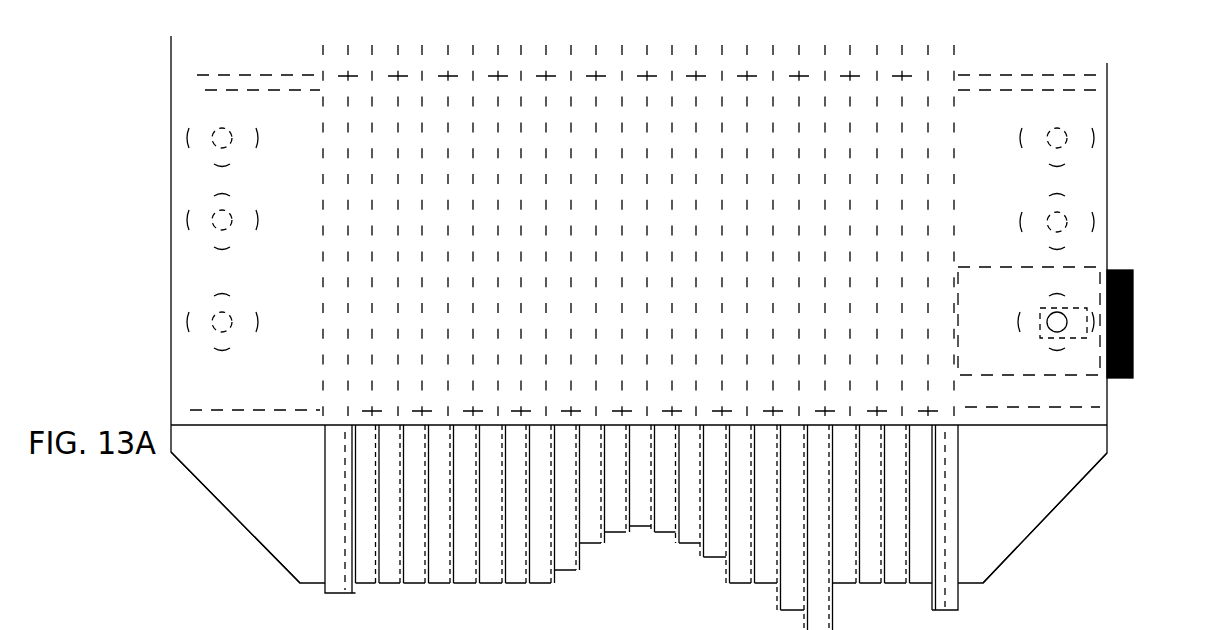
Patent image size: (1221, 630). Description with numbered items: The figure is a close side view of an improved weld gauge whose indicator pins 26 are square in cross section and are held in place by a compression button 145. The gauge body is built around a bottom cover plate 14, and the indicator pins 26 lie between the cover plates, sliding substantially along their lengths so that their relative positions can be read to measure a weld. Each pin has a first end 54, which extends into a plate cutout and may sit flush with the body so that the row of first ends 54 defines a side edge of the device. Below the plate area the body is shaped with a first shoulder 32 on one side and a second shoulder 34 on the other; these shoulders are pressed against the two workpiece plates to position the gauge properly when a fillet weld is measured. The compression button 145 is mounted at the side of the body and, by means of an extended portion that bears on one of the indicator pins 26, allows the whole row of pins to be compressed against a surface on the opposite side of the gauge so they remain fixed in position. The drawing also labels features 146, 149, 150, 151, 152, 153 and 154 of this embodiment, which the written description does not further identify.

The bottom cover plate 14 is at (190, 387).
The indicator pins 26 is at (335, 590).
The first shoulder 32 is at (255, 505).
The second shoulder 34 is at (1015, 512).
The first end 54 is at (638, 526).
The compression button 145 is at (1133, 323).
The fastener receptacle 146 is at (1078, 322).
The extended fin 149 is at (771, 527).
The extended fin 150 is at (867, 527).
The left mounting panel 151 is at (282, 270).
The right mounting panel 152 is at (1005, 168).
The mounting holes 153 is at (222, 138).
The fastener opening 154 is at (1060, 318).